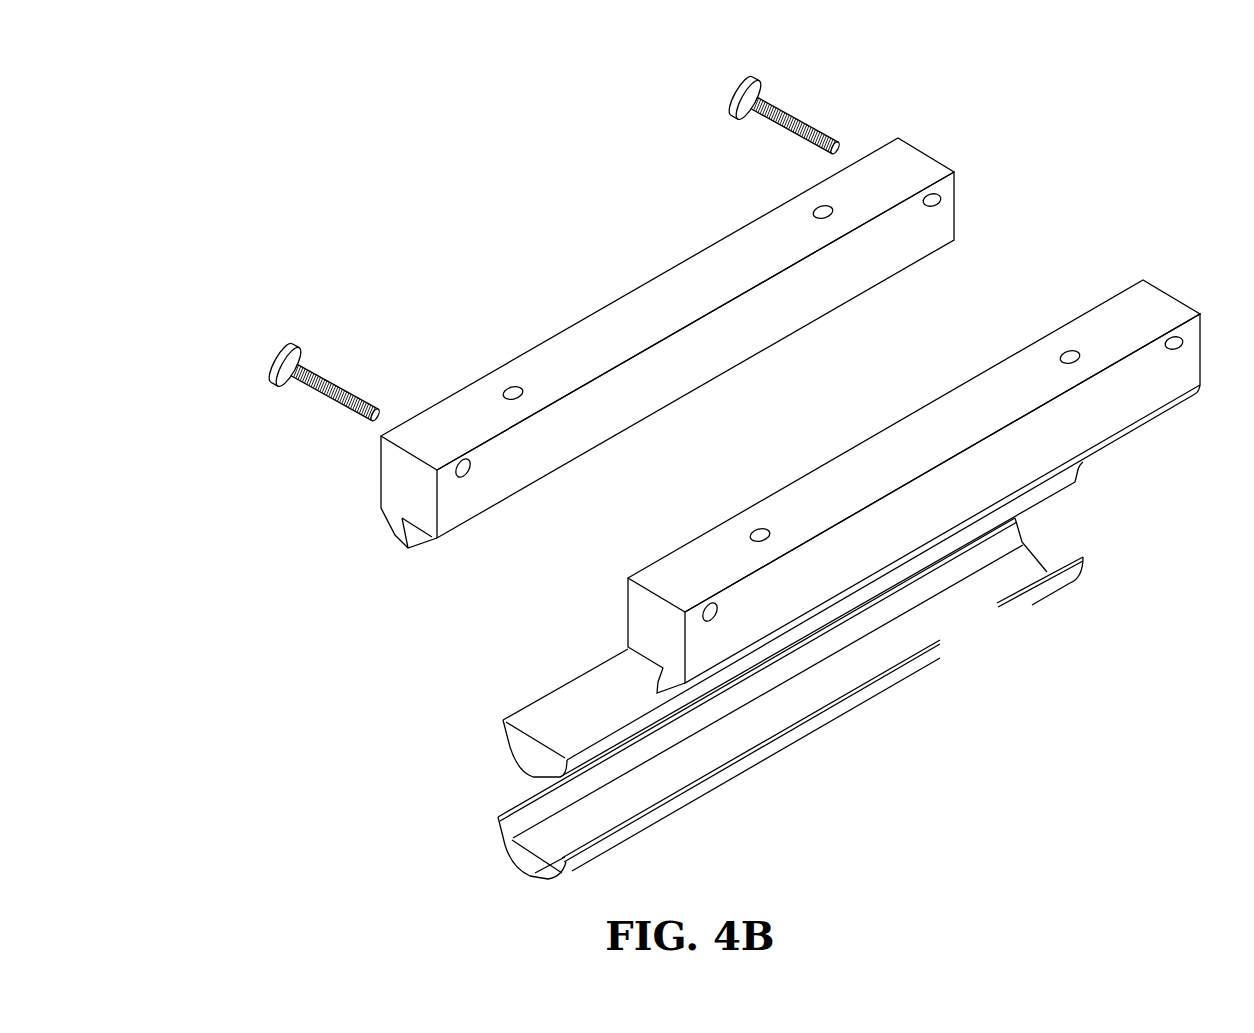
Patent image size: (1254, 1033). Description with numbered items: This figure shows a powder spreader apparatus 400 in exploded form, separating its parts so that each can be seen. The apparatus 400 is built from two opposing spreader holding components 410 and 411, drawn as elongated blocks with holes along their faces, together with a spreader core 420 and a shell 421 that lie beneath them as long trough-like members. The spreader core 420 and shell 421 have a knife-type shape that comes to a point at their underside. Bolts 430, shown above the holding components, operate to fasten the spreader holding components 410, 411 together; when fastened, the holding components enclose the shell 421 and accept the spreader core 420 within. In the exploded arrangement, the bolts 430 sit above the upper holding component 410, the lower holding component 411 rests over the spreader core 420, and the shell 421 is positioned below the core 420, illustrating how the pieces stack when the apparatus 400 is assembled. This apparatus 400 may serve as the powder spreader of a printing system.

The powder spreader apparatus 400 is at (211, 172).
The spreader holding component 410 is at (706, 283).
The spreader holding component 411 is at (788, 593).
The spreader core 420 is at (552, 719).
The shell 421 is at (528, 855).
The bolts 430 is at (766, 92).